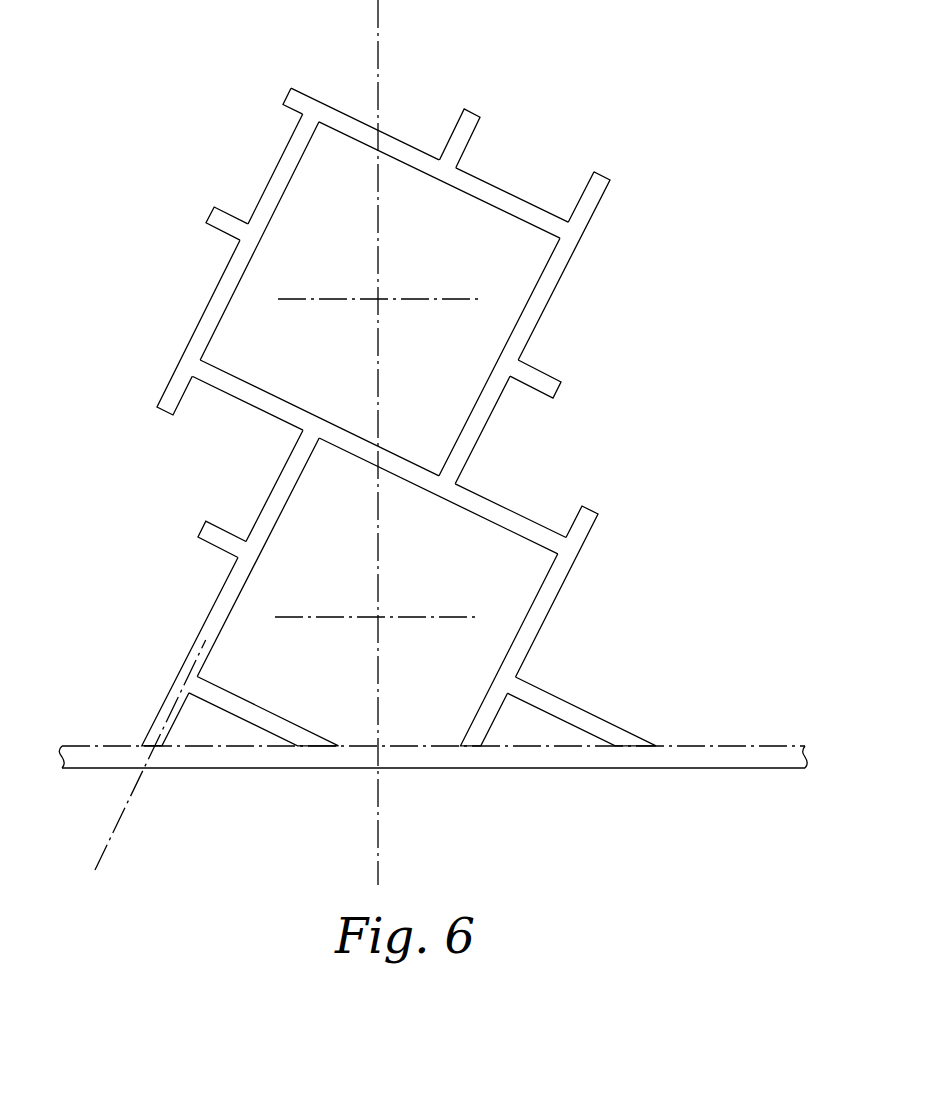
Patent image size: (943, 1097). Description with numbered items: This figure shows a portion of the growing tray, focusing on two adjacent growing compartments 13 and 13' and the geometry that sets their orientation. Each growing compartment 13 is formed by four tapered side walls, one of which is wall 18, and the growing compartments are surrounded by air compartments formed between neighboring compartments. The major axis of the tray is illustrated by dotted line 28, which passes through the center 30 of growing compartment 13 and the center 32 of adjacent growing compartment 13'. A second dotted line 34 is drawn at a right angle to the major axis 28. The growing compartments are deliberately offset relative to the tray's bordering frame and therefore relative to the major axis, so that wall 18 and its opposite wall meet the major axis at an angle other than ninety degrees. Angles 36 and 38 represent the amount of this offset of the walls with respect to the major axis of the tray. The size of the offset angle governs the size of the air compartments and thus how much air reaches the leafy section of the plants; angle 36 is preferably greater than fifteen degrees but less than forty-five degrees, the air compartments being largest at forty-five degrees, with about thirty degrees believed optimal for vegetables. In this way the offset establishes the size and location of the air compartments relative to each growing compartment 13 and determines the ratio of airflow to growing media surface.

The growing compartment 13 is at (415, 321).
The adjacent growing compartment 13' is at (373, 631).
The wall 18 is at (245, 700).
The dotted line 28 is at (381, 62).
The center 30 is at (381, 298).
The center 32 is at (381, 618).
The dotted line 34 is at (703, 742).
The angle 36 is at (268, 740).
The angle 38 is at (183, 737).